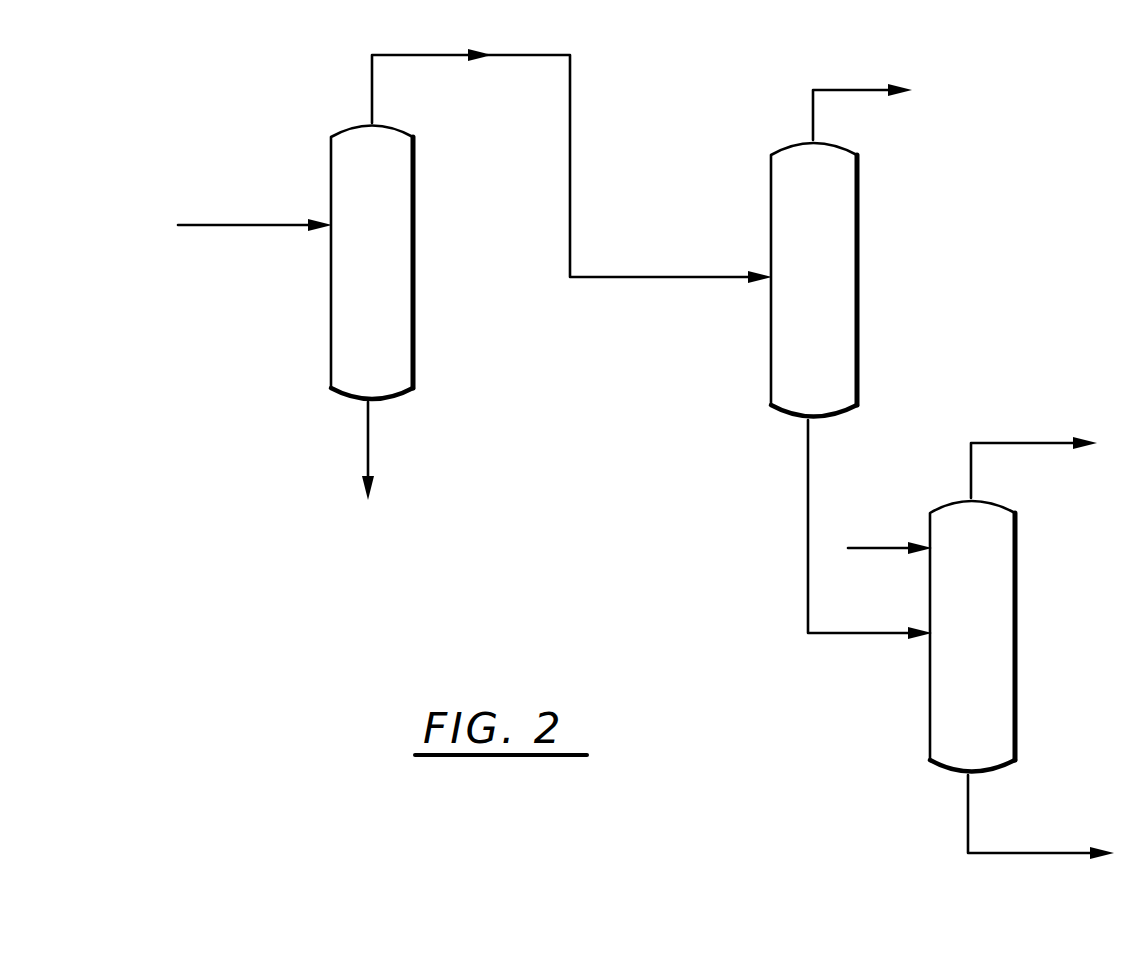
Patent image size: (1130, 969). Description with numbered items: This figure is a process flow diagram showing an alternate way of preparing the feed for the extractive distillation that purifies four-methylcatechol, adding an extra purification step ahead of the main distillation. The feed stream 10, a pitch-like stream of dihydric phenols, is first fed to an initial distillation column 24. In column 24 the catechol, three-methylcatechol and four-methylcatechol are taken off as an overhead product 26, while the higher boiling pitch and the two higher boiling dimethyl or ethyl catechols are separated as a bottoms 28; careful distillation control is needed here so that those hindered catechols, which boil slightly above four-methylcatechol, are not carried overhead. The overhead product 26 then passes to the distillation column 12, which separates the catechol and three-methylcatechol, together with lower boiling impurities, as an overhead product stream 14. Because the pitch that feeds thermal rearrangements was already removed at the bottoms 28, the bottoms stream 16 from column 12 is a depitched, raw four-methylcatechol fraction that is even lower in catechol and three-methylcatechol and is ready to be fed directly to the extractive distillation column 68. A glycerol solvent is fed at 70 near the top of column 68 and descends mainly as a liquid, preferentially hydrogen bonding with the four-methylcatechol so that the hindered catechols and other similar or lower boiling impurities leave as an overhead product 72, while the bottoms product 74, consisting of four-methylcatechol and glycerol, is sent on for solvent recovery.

The feed stream 10 is at (237, 227).
The initial distillation column 24 is at (413, 310).
The overhead product 26 is at (668, 279).
The bottoms 28 is at (368, 430).
The distillation column 12 is at (857, 318).
The overhead product stream 14 is at (813, 118).
The bottoms stream 16 is at (808, 588).
The glycerol solvent feed 70 is at (887, 545).
The extractive distillation column 68 is at (1015, 690).
The overhead product 72 is at (1022, 445).
The bottoms product 74 is at (1022, 855).